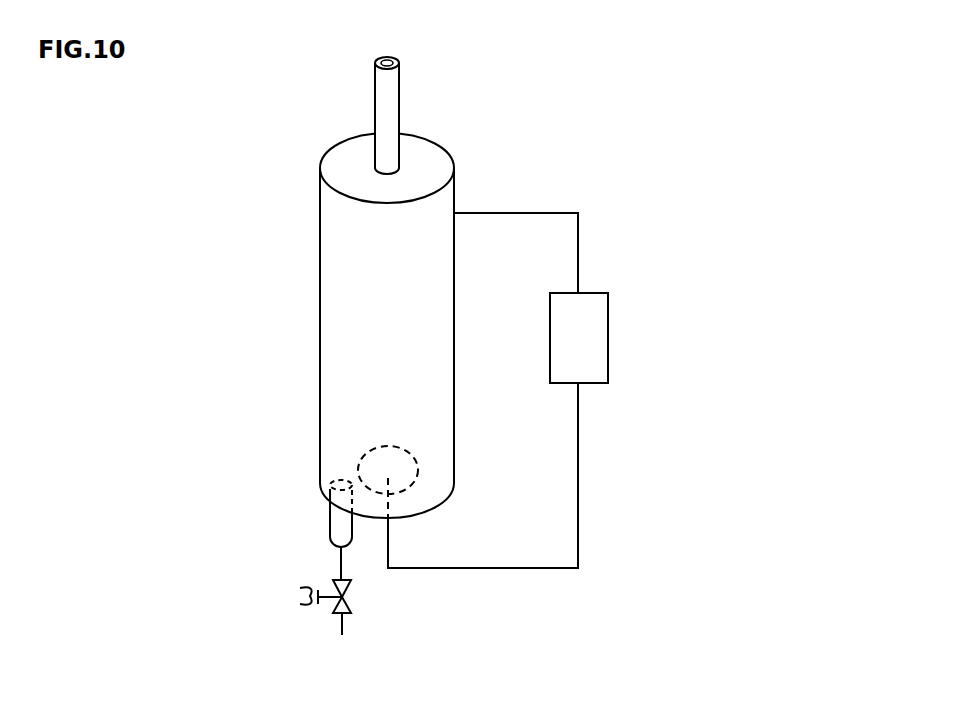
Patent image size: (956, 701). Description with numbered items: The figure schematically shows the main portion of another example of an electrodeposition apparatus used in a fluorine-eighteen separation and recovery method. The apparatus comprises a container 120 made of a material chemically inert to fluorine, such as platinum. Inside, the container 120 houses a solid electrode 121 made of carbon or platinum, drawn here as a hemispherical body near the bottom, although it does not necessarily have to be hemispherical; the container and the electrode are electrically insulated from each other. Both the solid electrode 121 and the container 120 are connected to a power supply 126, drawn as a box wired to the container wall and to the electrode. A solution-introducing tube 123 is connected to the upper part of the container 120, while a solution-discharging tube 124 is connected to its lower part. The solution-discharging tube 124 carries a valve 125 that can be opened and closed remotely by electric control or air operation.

The container 120 is at (313, 260).
The solid electrode 121 is at (417, 465).
The solution-introducing tube 123 is at (390, 90).
The solution-discharging tube 124 is at (337, 532).
The valve 125 is at (328, 603).
The power supply 126 is at (597, 318).